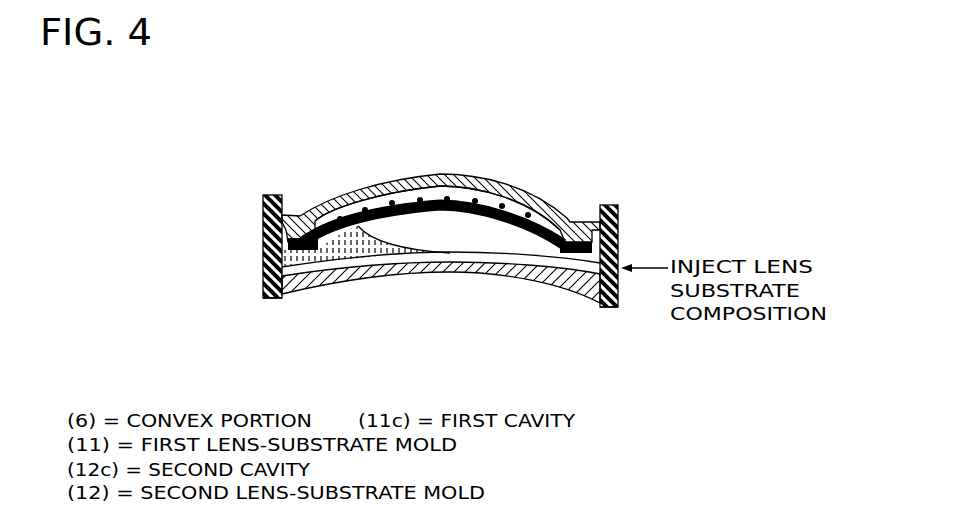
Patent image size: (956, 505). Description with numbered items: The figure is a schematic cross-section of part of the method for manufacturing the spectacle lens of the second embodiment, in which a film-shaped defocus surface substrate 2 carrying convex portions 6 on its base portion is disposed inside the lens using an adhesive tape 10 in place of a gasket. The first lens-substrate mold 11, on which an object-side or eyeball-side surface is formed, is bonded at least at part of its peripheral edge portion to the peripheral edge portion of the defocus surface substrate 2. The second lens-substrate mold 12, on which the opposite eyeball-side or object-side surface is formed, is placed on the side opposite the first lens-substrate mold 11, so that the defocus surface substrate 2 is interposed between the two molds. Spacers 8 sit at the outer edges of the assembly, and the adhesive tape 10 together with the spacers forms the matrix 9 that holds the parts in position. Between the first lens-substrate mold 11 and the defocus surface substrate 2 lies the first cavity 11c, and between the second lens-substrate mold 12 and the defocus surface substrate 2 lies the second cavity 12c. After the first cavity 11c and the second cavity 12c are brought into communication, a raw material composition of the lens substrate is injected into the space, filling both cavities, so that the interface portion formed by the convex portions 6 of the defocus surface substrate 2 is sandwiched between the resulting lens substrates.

The defocus surface substrate 2 is at (263, 250).
The convex portion 6 is at (447, 198).
The spacer 8 is at (293, 215).
The matrix 9 is at (648, 216).
The adhesive tape 10 is at (313, 337).
The first lens-substrate mold 11 is at (533, 196).
The first cavity 11c is at (397, 187).
The second lens-substrate mold 12 is at (505, 272).
The second cavity 12c is at (423, 272).